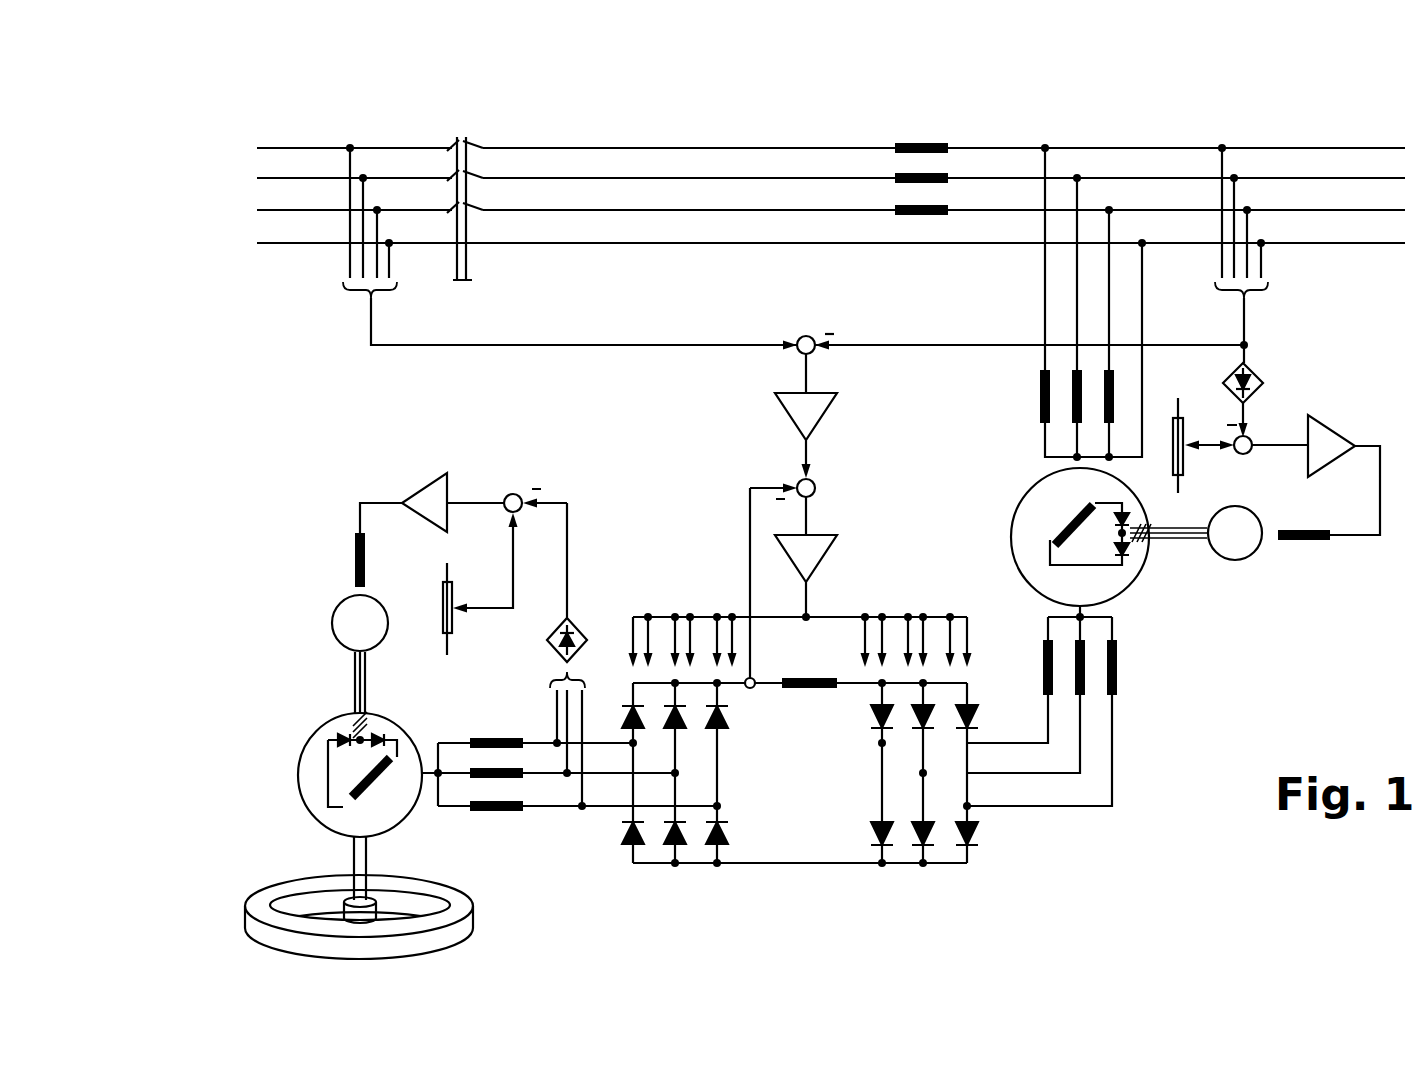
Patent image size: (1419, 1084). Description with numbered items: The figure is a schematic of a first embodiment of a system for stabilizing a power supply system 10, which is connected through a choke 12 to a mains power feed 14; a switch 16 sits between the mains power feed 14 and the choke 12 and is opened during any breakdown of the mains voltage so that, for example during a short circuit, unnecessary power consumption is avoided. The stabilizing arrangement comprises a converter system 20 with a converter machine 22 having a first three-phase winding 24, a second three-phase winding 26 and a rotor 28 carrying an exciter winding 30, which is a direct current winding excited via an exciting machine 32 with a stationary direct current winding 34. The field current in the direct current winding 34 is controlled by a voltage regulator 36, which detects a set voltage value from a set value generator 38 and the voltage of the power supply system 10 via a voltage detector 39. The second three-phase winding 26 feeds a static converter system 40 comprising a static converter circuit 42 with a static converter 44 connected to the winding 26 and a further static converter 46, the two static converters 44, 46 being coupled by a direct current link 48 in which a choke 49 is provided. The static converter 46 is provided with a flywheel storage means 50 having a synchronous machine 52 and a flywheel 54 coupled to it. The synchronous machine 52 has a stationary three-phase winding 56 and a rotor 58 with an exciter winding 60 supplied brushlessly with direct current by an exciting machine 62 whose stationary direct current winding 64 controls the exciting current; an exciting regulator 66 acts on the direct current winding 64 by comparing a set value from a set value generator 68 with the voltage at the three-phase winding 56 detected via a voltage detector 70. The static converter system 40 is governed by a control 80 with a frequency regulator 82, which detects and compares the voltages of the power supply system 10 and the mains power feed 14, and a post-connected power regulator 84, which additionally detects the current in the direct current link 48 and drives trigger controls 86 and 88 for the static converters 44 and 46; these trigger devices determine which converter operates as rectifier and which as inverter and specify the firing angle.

The power supply system 10 is at (1278, 172).
The choke 12 is at (920, 128).
The mains power feed 14 is at (404, 164).
The switch 16 is at (471, 126).
The converter system 20 is at (1131, 722).
The converter machine 22 is at (1128, 605).
The first three-phase winding 24 is at (1026, 393).
The second three-phase winding 26 is at (1133, 671).
The rotor 28 is at (1008, 519).
The exciter winding 30 is at (1062, 540).
The exciting machine 32 is at (1245, 563).
The stationary direct current winding 34 is at (1326, 552).
The voltage regulator 36 is at (1330, 432).
The set value generator 38 is at (1185, 468).
The voltage detector 39 is at (1263, 375).
The static converter system 40 is at (784, 878).
The static converter circuit 42 is at (857, 876).
The static converter 44 is at (945, 865).
The static converter 46 is at (653, 853).
The direct current link 48 is at (750, 865).
The choke 49 is at (802, 690).
The flywheel storage means 50 is at (292, 725).
The synchronous machine 52 is at (290, 806).
The flywheel 54 is at (258, 902).
The stationary three-phase winding 56 is at (503, 824).
The rotor 58 is at (303, 771).
The exciter winding 60 is at (375, 780).
The exciting machine 62 is at (320, 609).
The stationary direct current winding 64 is at (352, 546).
The exciting regulator 66 is at (416, 488).
The set value generator 68 is at (433, 642).
The voltage detector 70 is at (585, 632).
The control 80 is at (778, 465).
The frequency regulator 82 is at (783, 405).
The power regulator 84 is at (824, 536).
The trigger control 86 is at (912, 625).
The trigger control 88 is at (663, 628).